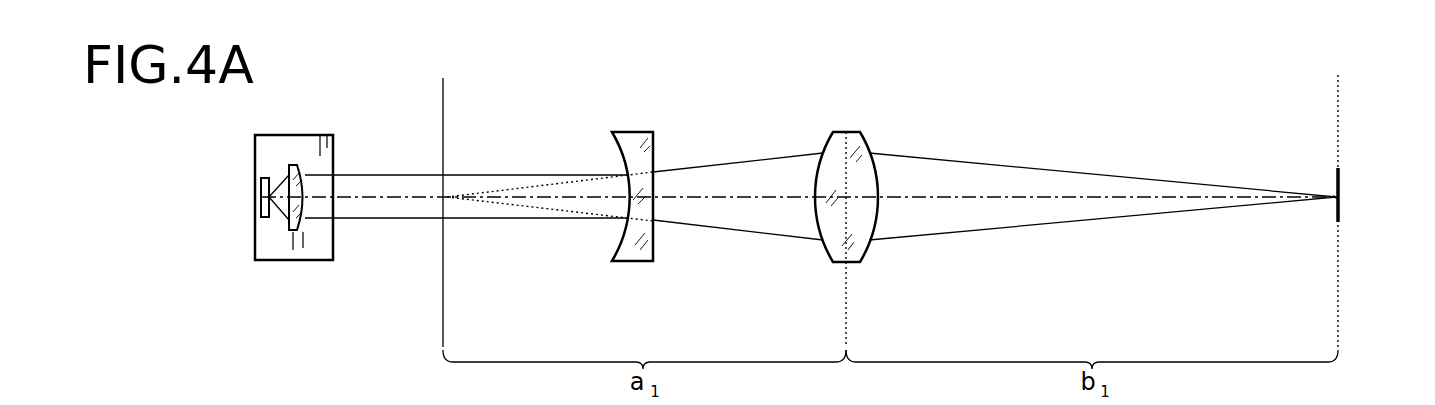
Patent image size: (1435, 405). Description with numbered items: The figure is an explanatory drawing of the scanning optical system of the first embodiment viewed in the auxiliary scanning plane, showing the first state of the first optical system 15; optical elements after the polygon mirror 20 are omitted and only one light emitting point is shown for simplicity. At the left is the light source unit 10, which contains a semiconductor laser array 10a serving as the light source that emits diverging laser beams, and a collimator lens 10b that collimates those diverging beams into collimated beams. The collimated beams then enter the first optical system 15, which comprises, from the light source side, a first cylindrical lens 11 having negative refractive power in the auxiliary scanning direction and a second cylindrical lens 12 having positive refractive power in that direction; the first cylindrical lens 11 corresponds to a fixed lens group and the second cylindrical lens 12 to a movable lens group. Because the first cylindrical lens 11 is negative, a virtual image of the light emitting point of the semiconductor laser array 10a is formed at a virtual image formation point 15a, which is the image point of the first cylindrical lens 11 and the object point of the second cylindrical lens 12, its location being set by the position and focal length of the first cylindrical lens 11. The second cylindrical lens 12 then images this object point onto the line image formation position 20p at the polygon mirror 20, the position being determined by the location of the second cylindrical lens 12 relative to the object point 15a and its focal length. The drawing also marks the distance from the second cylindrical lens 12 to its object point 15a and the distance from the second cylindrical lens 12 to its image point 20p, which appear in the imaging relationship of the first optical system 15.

The light source unit 10 is at (335, 246).
The semiconductor laser array 10a is at (263, 218).
The collimator lens 10b is at (291, 165).
The first cylindrical lens 11 is at (635, 262).
The second cylindrical lens 12 is at (832, 258).
The first optical system 15 is at (880, 113).
The virtual image formation point 15a is at (442, 196).
The polygon mirror 20 is at (1340, 205).
The line image formation position 20p is at (1336, 195).